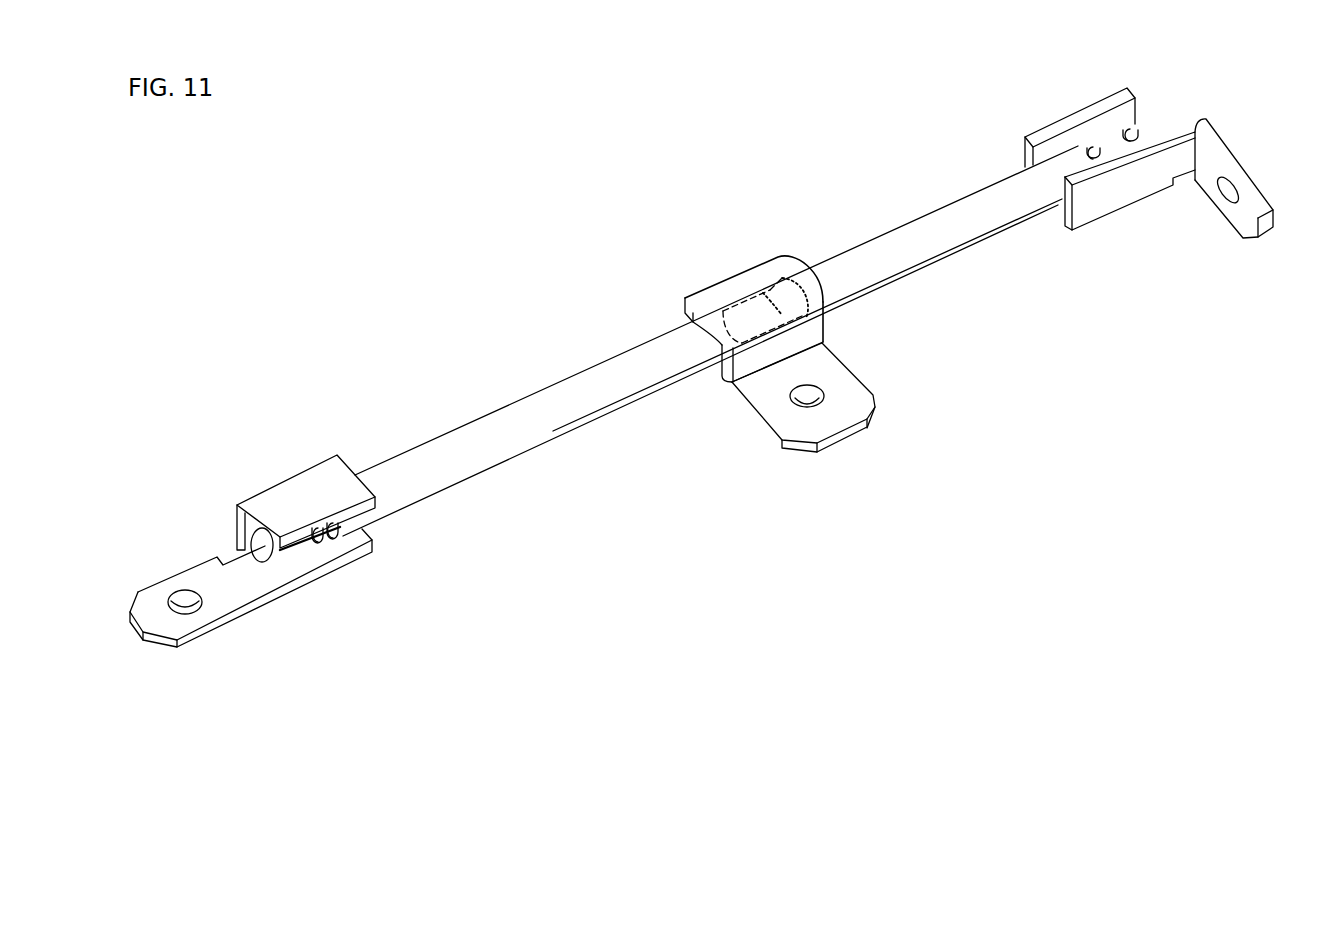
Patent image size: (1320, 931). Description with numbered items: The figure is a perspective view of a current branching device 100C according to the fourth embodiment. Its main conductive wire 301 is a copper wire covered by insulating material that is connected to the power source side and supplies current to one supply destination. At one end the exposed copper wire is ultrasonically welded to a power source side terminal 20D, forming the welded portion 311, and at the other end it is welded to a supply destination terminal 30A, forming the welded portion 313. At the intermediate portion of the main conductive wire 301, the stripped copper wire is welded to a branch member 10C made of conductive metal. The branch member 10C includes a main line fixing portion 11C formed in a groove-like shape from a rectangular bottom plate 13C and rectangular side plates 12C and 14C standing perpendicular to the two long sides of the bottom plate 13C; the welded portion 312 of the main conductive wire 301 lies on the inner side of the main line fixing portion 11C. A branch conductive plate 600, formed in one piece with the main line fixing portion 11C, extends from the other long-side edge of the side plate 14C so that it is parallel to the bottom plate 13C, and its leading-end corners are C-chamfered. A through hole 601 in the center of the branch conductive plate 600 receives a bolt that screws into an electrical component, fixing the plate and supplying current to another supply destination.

The current branching device 100C is at (352, 237).
The main conductive wire 301 is at (911, 230).
The supply destination terminal 30A is at (295, 477).
The welded portion 313 is at (300, 545).
The branch member 10C is at (720, 248).
The bottom plate 13C is at (728, 290).
The side plate 12C is at (690, 307).
The side plate 14C is at (823, 329).
The main line fixing portion 11C is at (718, 375).
The welded portion 312 is at (752, 300).
The branch conductive plate 600 is at (867, 383).
The through hole 601 is at (799, 403).
The power source side terminal 20D is at (1093, 101).
The welded portion 311 is at (1100, 150).